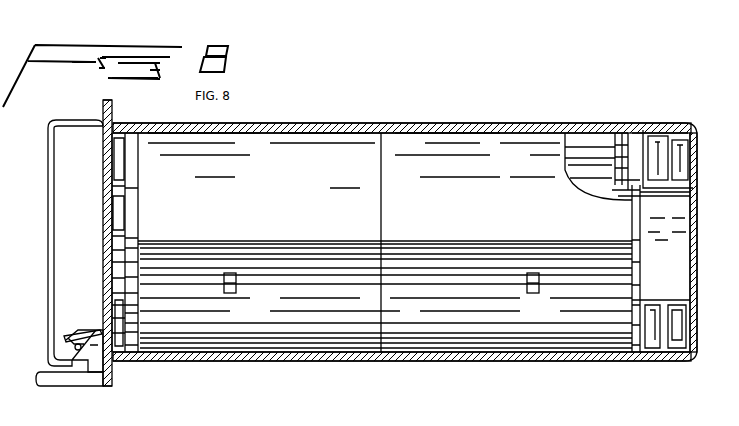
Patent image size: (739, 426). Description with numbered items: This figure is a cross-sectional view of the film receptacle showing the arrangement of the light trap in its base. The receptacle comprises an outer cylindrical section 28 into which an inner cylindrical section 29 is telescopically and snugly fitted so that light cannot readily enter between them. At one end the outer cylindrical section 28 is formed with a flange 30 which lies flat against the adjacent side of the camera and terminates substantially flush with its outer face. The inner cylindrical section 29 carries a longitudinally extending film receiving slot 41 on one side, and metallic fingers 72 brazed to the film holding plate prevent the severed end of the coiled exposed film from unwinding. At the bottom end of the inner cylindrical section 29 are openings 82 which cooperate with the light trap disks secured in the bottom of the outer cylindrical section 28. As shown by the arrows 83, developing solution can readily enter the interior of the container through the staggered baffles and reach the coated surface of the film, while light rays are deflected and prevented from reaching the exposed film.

The outer cylindrical section 28 is at (482, 123).
The inner cylindrical section 29 is at (573, 133).
The flange 30 is at (113, 108).
The film receiving slot 41 is at (314, 241).
The metallic fingers 72 is at (236, 283).
The openings 82 is at (630, 140).
The arrows 83 is at (618, 133).